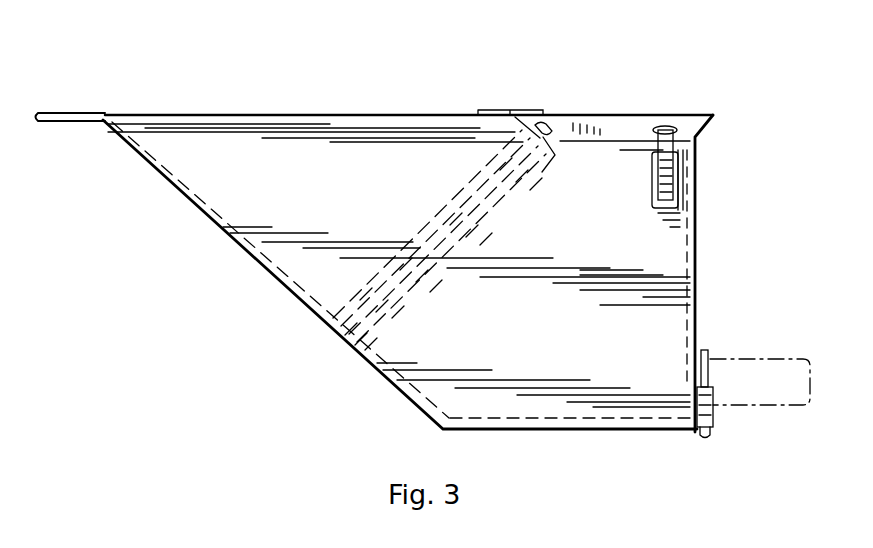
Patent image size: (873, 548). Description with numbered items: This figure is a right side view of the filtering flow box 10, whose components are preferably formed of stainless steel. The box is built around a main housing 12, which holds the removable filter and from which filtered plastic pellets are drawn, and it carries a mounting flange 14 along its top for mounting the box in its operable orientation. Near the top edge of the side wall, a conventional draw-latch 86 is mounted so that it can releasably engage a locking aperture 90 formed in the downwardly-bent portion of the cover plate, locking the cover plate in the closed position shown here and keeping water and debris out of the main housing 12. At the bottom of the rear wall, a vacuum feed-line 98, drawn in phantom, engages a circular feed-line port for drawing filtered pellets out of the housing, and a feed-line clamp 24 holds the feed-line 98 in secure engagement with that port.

The filtering flow box 10 is at (763, 73).
The main housing 12 is at (227, 320).
The mounting flange 14 is at (148, 115).
The feed-line clamp 24 is at (707, 405).
The draw-latch 86 is at (660, 157).
The locking aperture 90 is at (650, 117).
The vacuum feed-line 98 is at (760, 378).